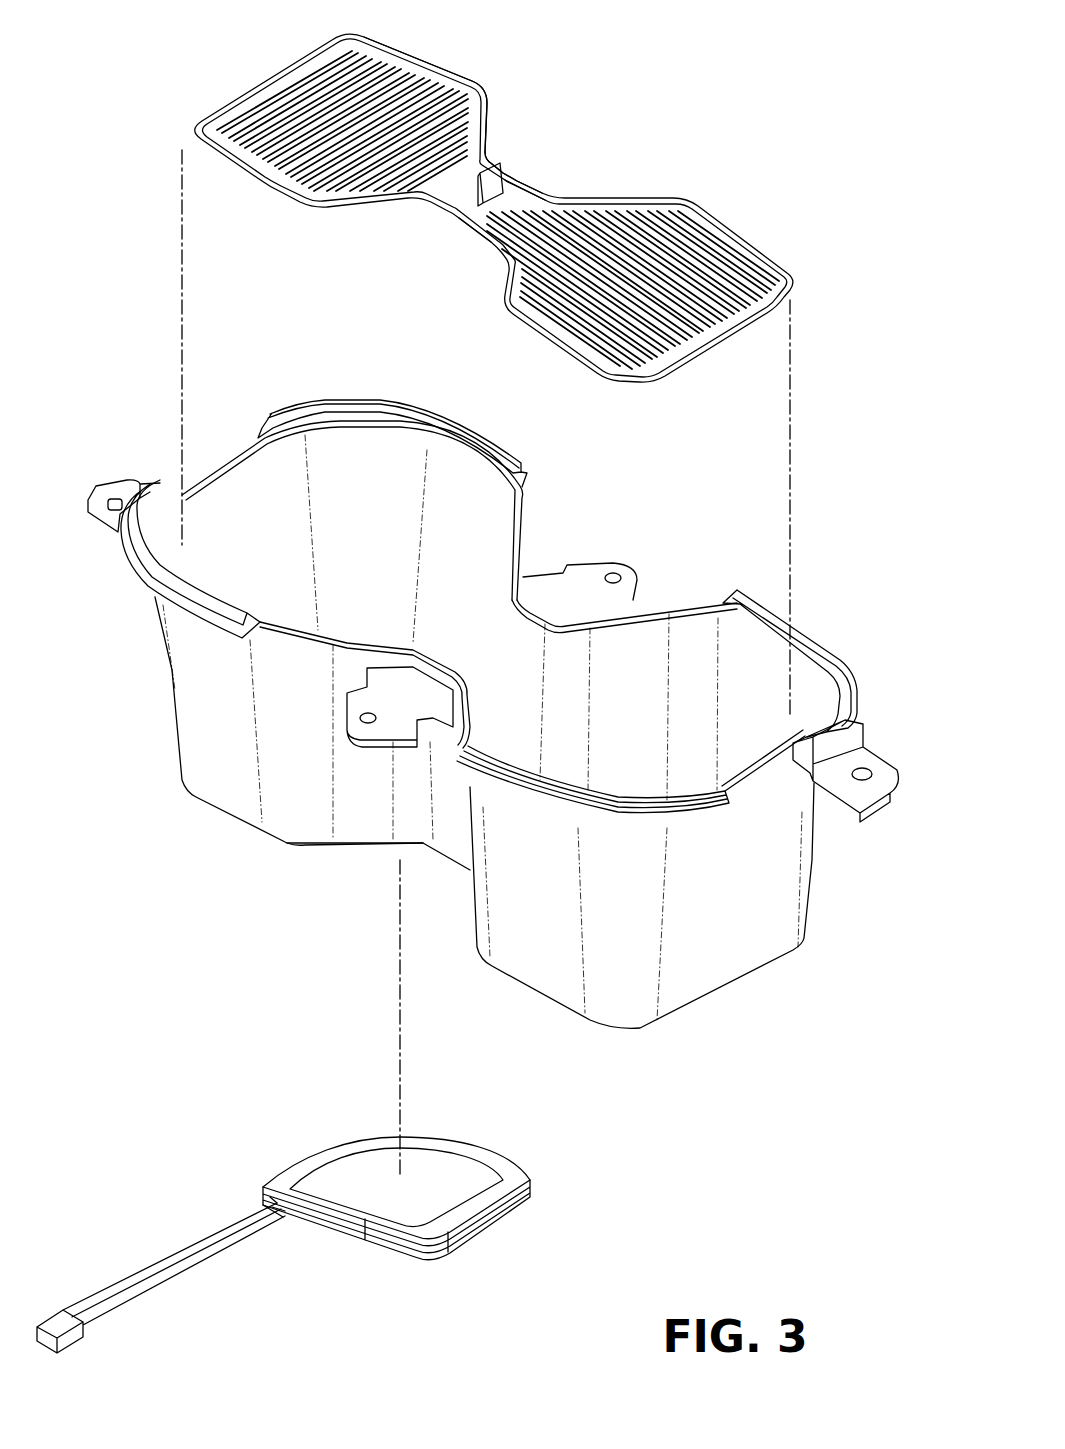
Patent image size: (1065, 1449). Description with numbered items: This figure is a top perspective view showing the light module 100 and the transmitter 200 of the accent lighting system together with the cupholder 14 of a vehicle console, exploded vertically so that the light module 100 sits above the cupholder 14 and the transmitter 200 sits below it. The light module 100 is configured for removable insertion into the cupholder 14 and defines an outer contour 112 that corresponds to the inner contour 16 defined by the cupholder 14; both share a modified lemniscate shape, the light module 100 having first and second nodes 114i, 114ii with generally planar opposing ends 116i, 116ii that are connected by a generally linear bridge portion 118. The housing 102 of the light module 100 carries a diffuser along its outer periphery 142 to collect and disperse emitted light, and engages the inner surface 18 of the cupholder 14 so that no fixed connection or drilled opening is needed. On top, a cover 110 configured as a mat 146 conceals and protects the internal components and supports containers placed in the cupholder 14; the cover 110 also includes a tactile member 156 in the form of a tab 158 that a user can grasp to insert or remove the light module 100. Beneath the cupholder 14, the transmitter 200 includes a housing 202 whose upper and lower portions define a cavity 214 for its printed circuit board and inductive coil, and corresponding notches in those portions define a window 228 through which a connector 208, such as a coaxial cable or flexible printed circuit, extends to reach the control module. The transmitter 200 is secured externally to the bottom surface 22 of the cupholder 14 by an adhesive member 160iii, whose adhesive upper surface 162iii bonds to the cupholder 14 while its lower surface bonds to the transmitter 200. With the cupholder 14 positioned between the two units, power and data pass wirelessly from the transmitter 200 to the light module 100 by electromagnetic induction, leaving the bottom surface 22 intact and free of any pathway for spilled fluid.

The light module 100 is at (160, 70).
The housing 102 is at (678, 383).
The cover 110 is at (697, 240).
The outer contour 112 is at (480, 60).
The first node 114i is at (253, 195).
The second node 114ii is at (527, 352).
The planar opposing end 116i is at (247, 80).
The planar opposing end 116ii is at (720, 347).
The bridge portion 118 is at (457, 235).
The outer periphery 142 is at (482, 78).
The mat 146 is at (722, 280).
The tactile member 156 is at (520, 140).
The tab 158 is at (500, 178).
The cupholder 14 is at (217, 832).
The inner contour 16 is at (480, 527).
The inner surface 18 is at (573, 693).
The bottom surface 22 is at (353, 847).
The transmitter 200 is at (177, 1160).
The housing 202 is at (487, 1243).
The adhesive member 160iii is at (497, 1160).
The adhesive upper surface 162iii is at (440, 1160).
The connector 208 is at (123, 1310).
The cavity 214 is at (347, 1223).
The window 228 is at (280, 1233).